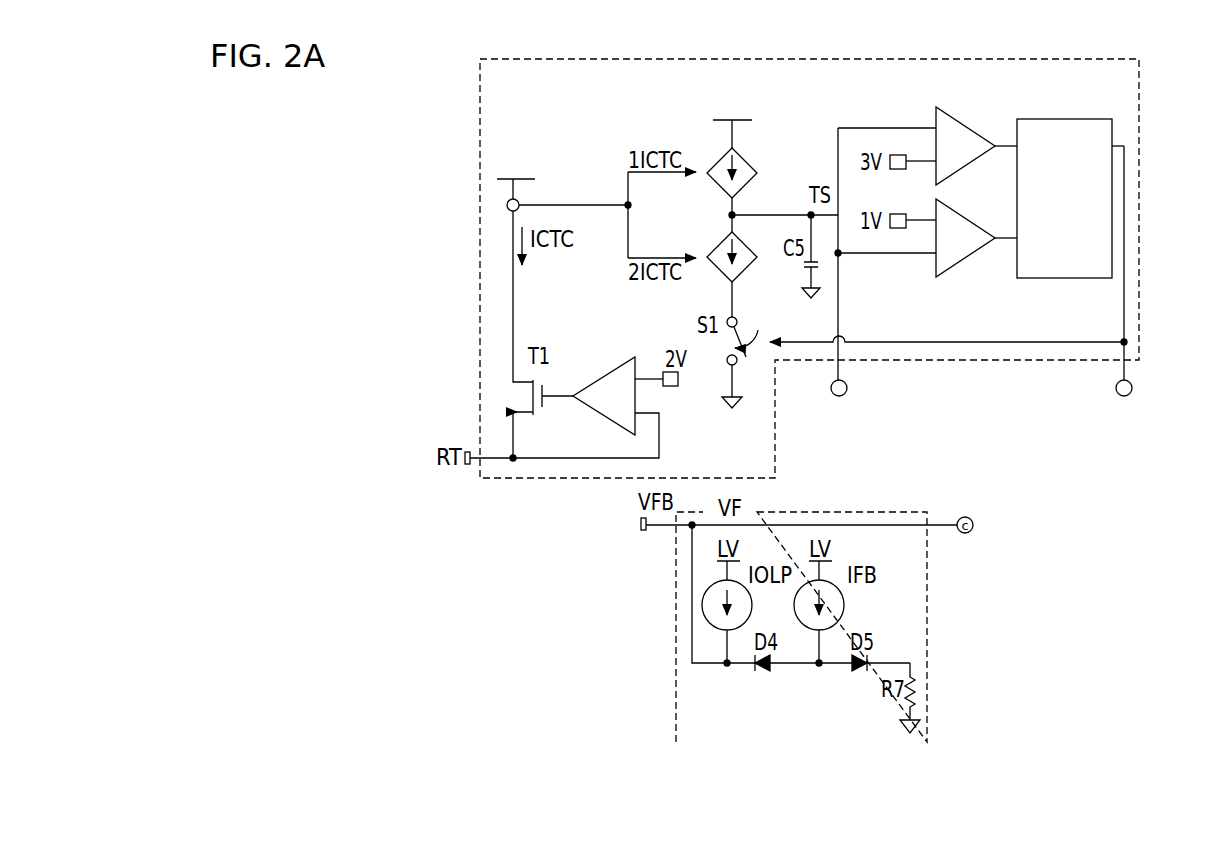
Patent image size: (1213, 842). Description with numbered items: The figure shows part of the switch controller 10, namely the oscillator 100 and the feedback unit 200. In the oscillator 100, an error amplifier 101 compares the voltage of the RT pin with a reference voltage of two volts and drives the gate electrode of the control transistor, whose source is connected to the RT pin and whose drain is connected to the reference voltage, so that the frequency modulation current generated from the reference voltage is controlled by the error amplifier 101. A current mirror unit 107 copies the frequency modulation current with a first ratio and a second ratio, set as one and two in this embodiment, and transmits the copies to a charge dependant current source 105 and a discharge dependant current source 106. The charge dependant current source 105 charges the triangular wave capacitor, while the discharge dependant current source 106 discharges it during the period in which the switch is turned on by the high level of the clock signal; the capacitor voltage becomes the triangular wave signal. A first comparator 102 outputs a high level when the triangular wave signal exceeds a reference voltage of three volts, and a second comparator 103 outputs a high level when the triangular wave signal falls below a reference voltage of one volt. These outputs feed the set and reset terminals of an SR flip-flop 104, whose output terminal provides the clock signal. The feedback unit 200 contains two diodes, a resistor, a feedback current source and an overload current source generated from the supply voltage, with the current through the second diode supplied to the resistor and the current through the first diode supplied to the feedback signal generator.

The switch controller 10 is at (1167, 110).
The oscillator 100 is at (1139, 196).
The error amplifier 101 is at (604, 377).
The first comparator 102 is at (967, 123).
The second comparator 103 is at (975, 254).
The SR flip-flop 104 is at (1027, 278).
The charge dependant current source 105 is at (745, 152).
The discharge dependant current source 106 is at (748, 268).
The current mirror unit 107 is at (519, 201).
The feedback unit 200 is at (927, 685).